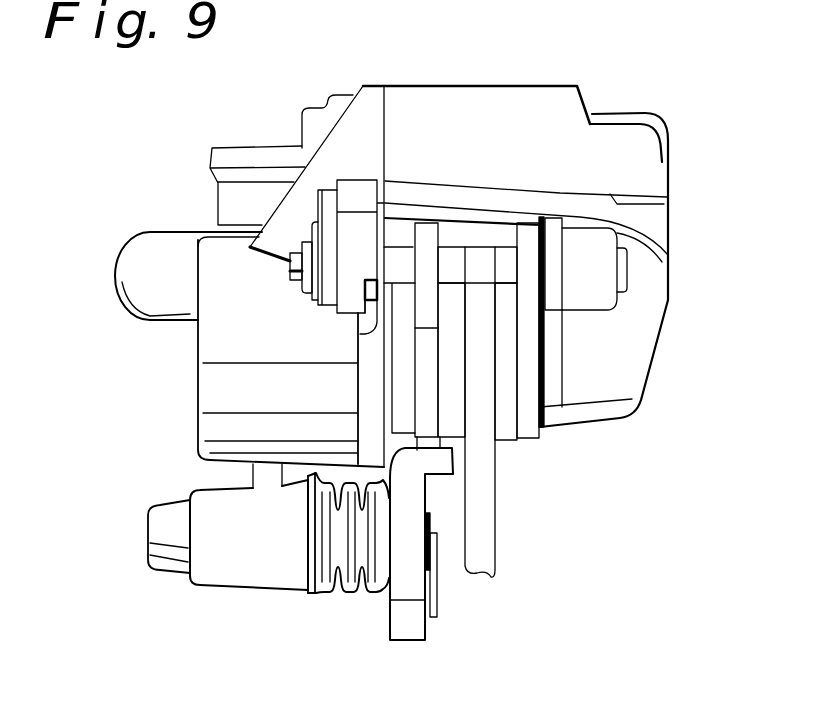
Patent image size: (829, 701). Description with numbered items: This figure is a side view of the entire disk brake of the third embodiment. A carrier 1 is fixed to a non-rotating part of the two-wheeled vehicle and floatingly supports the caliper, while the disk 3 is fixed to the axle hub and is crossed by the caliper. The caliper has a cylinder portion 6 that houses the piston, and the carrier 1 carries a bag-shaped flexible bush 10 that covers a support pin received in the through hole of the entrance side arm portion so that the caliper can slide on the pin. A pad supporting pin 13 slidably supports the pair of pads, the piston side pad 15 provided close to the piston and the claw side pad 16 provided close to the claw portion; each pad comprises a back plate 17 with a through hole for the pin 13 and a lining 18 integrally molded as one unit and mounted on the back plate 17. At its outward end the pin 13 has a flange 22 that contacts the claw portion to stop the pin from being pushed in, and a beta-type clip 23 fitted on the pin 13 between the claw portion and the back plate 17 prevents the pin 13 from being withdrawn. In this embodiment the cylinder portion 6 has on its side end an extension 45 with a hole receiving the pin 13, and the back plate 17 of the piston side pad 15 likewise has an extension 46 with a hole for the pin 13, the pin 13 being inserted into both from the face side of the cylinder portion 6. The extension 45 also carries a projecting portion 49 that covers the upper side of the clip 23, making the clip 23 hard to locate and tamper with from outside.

The carrier 1 is at (403, 626).
The disk 3 is at (483, 565).
The cylinder portion 6 is at (207, 336).
The flexible bush 10 is at (170, 522).
The pad supporting pin 13 is at (292, 262).
The piston side pad 15 is at (412, 368).
The claw side pad 16 is at (544, 367).
The back plate 17 is at (428, 418).
The lining 18 is at (452, 387).
The flange 22 is at (313, 288).
The clip 23 is at (375, 303).
The extension 45 is at (347, 249).
The extension 46 is at (427, 242).
The projecting portion 49 is at (367, 232).